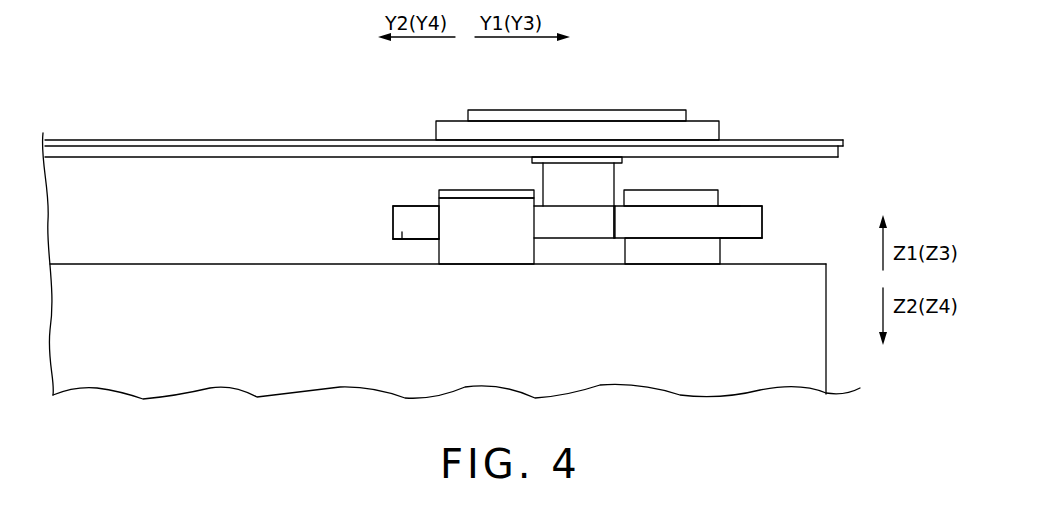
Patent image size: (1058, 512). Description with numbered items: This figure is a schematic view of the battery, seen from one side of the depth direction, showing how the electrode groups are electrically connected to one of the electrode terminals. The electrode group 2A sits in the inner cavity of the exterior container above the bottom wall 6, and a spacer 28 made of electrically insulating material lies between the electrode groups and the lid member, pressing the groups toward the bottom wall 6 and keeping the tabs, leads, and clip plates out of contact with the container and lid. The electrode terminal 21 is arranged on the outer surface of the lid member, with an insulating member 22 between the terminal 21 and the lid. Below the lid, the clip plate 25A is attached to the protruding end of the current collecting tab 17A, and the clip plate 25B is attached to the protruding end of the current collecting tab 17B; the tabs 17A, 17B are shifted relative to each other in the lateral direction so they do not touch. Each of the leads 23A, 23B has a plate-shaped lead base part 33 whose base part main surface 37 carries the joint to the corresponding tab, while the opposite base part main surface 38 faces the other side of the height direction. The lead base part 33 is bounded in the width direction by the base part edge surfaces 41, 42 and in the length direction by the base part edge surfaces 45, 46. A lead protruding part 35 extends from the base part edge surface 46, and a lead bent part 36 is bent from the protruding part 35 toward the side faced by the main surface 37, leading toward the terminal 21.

The first electrode group 2A is at (316, 377).
The bottom wall 6 is at (252, 135).
The spacer 28 is at (218, 170).
The electrode terminal 21 is at (573, 118).
The insulating member 22 is at (700, 128).
The lead bent part 36 is at (598, 180).
The lead protruding part 35 is at (575, 228).
The first clip plate 25A is at (453, 191).
The second clip plate 25B is at (697, 191).
The first current collecting tab 17A is at (483, 253).
The second current collecting tab 17B is at (692, 253).
The lead base part 33 is at (397, 204).
The first lead 23A is at (412, 237).
The second lead 23B is at (733, 235).
The first base part edge surface 41 is at (402, 239).
The first base part main surface 37 is at (417, 206).
The second base part main surface 38 is at (427, 240).
The base part edge surface 45 is at (393, 222).
The second base part edge surface 42 is at (645, 230).
The base part edge surface 46 is at (615, 222).